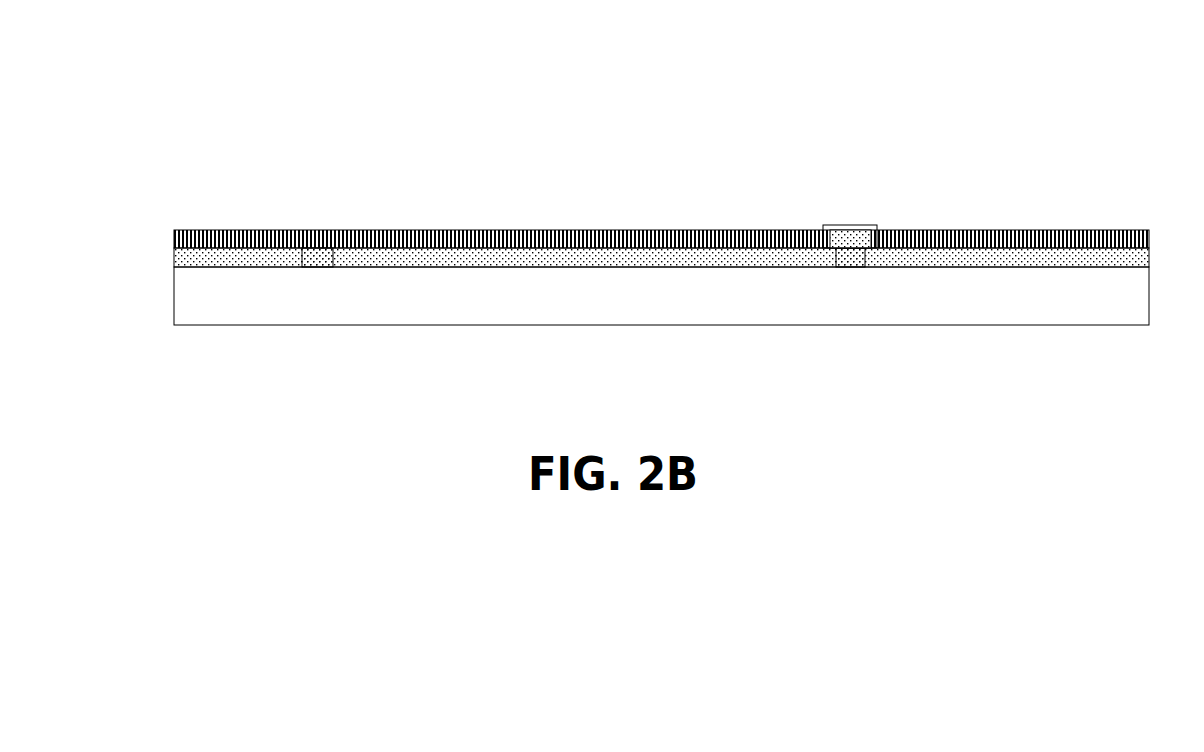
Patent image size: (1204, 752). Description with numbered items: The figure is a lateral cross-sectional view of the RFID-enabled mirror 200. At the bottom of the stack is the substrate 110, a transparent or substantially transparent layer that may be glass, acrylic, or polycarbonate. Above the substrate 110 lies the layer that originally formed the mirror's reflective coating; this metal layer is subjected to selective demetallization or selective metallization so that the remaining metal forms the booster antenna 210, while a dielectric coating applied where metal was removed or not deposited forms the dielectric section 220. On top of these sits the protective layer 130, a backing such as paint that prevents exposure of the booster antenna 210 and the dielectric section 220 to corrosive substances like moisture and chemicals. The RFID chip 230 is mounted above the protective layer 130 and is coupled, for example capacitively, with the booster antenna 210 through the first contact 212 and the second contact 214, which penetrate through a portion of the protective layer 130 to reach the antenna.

The RFID-enabled mirror 200 is at (1075, 84).
The substrate layer 110 is at (216, 308).
The protective layer 130 is at (304, 238).
The dielectric section 220 is at (175, 258).
The booster antenna 210 is at (317, 262).
The first contact 212 is at (850, 238).
The second contact 214 is at (850, 239).
The RFID chip 230 is at (850, 226).